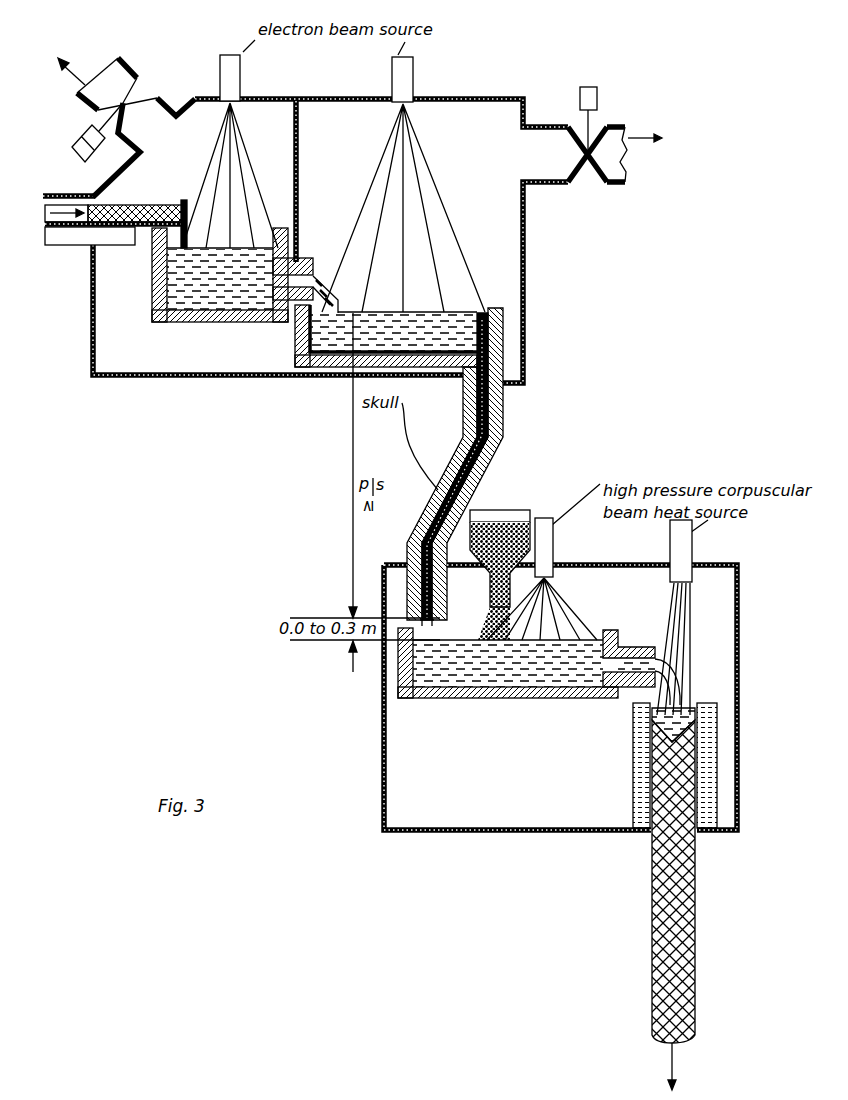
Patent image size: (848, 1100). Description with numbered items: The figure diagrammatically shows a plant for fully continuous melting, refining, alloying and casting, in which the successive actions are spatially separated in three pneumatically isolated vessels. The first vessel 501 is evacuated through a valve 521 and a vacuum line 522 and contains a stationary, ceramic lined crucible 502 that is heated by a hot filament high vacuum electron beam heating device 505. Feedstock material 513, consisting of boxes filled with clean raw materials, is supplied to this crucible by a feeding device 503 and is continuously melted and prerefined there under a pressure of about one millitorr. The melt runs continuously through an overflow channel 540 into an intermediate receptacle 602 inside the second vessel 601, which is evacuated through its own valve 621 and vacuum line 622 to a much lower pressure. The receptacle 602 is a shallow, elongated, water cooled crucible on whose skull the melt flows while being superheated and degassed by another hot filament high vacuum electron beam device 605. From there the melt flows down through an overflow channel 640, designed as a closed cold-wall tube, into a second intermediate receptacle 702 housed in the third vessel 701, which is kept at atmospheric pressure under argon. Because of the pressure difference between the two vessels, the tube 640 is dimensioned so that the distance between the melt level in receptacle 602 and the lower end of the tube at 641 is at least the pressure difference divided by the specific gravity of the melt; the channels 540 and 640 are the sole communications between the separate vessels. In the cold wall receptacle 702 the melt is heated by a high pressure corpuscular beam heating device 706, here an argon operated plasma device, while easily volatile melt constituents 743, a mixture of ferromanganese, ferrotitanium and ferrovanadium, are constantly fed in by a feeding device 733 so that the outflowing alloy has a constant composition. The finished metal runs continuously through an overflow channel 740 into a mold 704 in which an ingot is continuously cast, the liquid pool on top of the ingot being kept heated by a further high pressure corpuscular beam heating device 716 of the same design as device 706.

The vessel 501 is at (190, 380).
The stationary crucible 502 is at (204, 322).
The feeding device 503 is at (115, 238).
The hot filament high vacuum electron beam heating device 505 is at (242, 76).
The material 513 is at (143, 205).
The valve 521 is at (143, 90).
The vacuum line 522 is at (103, 68).
The overflow channel 540 is at (298, 260).
The vessel 601 is at (425, 380).
The intermediate receptacle 602 is at (327, 370).
The hot filament high vacuum electron beam device 605 is at (413, 78).
The valve 621 is at (598, 168).
The vacuum line 622 is at (618, 158).
The overflow channel 640 is at (503, 410).
The lower end of tube 641 is at (438, 621).
The vessel 701 is at (452, 832).
The second intermediate receptacle 702 is at (440, 700).
The mold 704 is at (633, 732).
The high pressure corpuscular beam heating device 706 is at (554, 545).
The further high pressure corpuscular beam heating device 716 is at (692, 547).
The feeding device 733 is at (520, 510).
The overflow channel 740 is at (632, 647).
The easily volatile melt constituents 743 is at (483, 530).